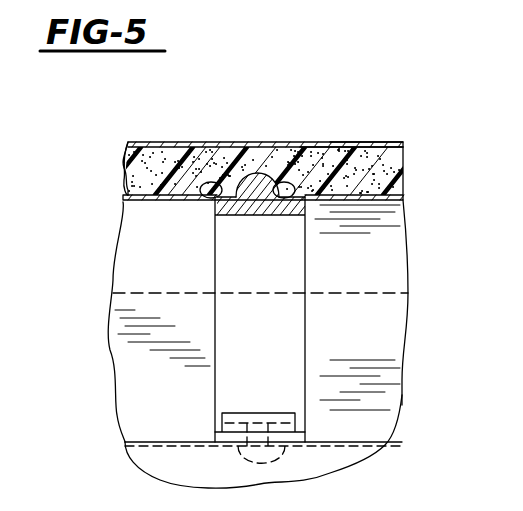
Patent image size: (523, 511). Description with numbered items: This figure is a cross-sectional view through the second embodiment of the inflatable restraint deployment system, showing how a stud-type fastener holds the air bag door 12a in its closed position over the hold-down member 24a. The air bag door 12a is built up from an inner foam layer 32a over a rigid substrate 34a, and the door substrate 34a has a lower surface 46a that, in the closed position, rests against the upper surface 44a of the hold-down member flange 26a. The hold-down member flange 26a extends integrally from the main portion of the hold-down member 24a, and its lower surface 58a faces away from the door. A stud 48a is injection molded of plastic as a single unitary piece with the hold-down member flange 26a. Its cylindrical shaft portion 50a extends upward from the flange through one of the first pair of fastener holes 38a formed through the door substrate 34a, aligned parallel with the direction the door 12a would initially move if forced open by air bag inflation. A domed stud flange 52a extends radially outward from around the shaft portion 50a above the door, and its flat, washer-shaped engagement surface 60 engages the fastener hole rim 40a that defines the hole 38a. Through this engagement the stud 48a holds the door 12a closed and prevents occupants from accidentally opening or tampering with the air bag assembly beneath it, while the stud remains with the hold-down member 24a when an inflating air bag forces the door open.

The air bag door 12a is at (163, 141).
The lower surface of air bag door substrate 46a is at (123, 202).
The stud-type door hold-down fastener 48a is at (328, 143).
The engagement surface 60 is at (355, 142).
The first fastener hole rim 40a is at (284, 191).
The inner foam layer 32a is at (221, 165).
The stud flange 52a is at (238, 180).
The upper surface of hold-down member flange 44a is at (208, 199).
The lower surface of hold-down member flange 58a is at (305, 292).
The cylindrical shaft portion 50a is at (238, 216).
The first pair of fastener holes 38a is at (245, 218).
The rigid substrate 34a is at (145, 208).
The door hold-down member 24a is at (311, 269).
The hold-down member flange 26a is at (305, 228).